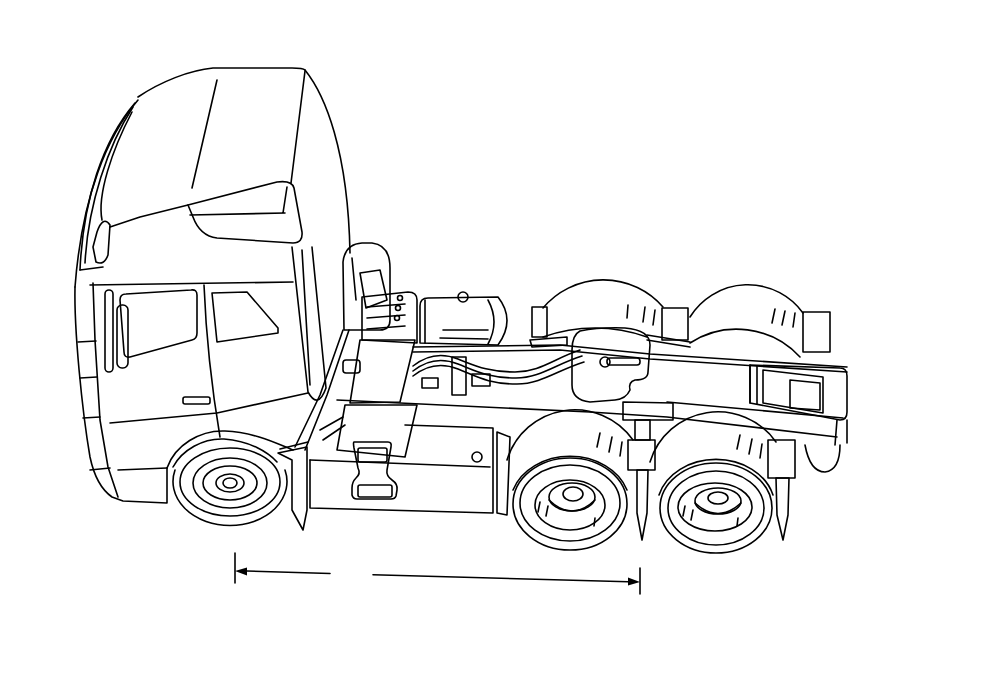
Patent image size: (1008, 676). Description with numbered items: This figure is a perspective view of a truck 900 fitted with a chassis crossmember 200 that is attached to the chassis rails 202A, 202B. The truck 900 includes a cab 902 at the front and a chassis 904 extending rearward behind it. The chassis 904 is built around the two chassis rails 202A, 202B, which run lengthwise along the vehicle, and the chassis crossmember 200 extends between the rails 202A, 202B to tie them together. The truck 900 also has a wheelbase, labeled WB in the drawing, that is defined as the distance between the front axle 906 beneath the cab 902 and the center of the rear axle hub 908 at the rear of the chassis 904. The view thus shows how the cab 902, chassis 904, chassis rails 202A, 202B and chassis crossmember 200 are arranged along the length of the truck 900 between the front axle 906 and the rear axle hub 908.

The truck 900 is at (564, 156).
The cab 902 is at (236, 75).
The chassis 904 is at (687, 345).
The front axle 906 is at (228, 488).
The rear axle hub 908 is at (647, 520).
The chassis crossmember 200 is at (472, 355).
The chassis rail 202A is at (470, 413).
The chassis rail 202B is at (510, 342).